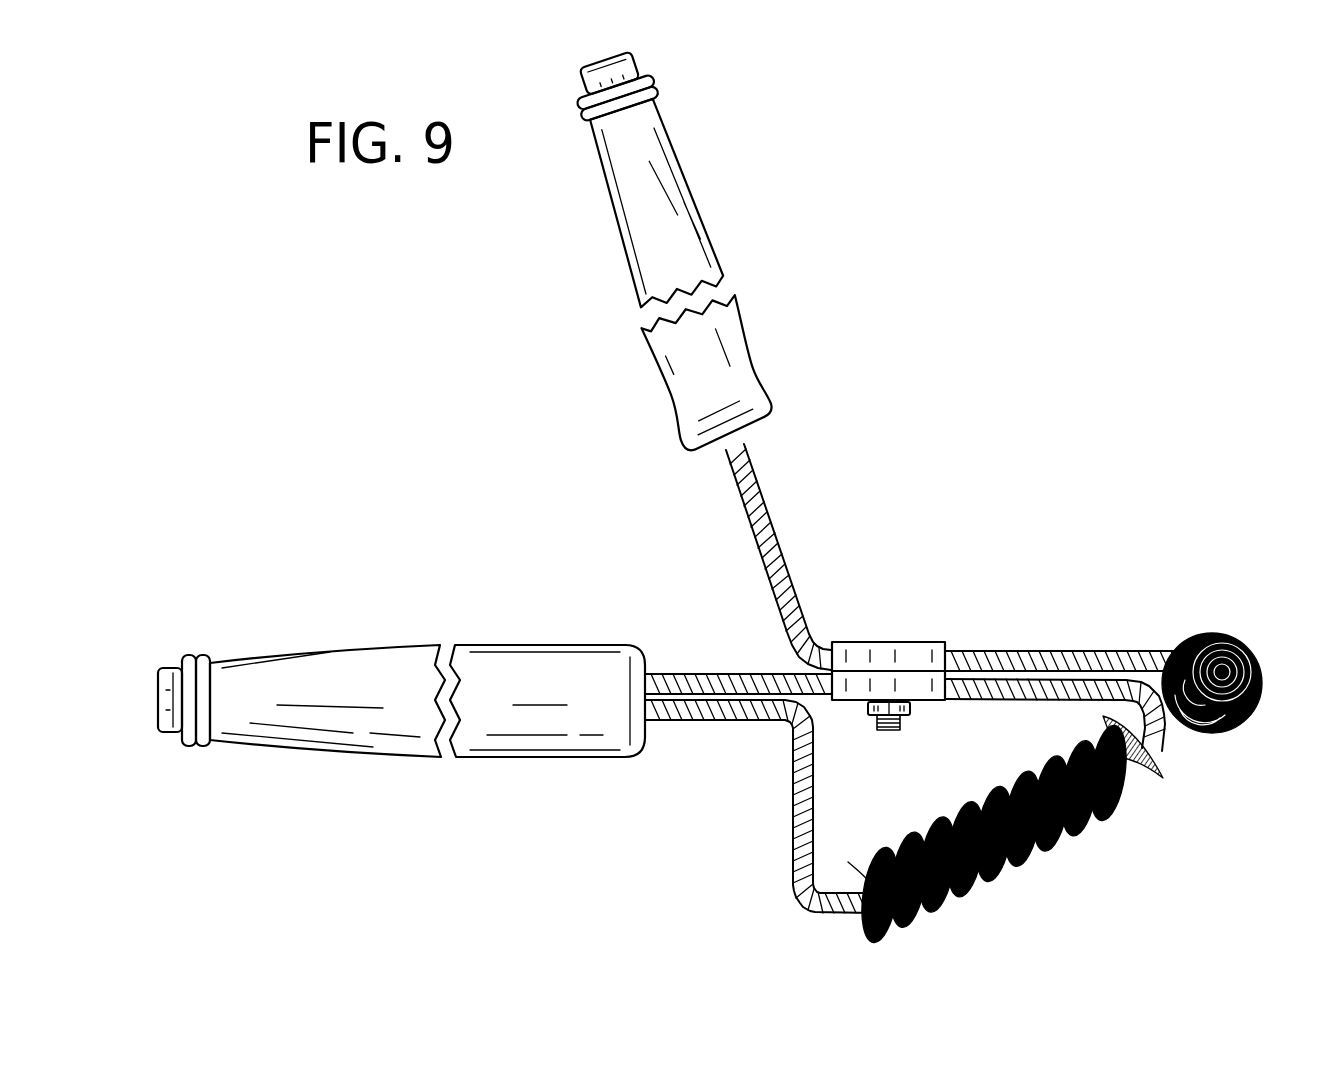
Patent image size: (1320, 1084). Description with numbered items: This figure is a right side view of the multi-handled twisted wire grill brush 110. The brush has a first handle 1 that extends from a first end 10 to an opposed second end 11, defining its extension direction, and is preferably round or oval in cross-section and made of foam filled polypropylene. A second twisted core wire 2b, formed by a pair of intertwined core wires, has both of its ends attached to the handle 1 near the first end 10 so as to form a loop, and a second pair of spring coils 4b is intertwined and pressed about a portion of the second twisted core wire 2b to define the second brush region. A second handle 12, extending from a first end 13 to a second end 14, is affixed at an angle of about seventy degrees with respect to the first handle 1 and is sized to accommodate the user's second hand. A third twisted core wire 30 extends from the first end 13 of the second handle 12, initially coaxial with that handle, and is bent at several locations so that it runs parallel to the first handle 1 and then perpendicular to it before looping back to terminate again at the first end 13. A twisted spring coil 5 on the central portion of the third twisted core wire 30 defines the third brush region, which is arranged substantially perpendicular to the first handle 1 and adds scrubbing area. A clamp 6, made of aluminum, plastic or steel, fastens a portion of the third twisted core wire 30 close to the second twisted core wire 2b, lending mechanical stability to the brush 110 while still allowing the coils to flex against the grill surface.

The handle 1 is at (393, 645).
The second twisted core wire 2b is at (723, 720).
The second pair of spring coils 4b is at (1076, 838).
The twisted spring coil 5 is at (1246, 638).
The clamp 6 is at (888, 642).
The first end 10 is at (646, 650).
The second end 11 is at (157, 668).
The second handle 12 is at (619, 268).
The first end 13 is at (716, 448).
The second end 14 is at (584, 62).
The third twisted core wire 30 is at (784, 567).
The multi-handled twisted wire grill brush 110 is at (966, 440).